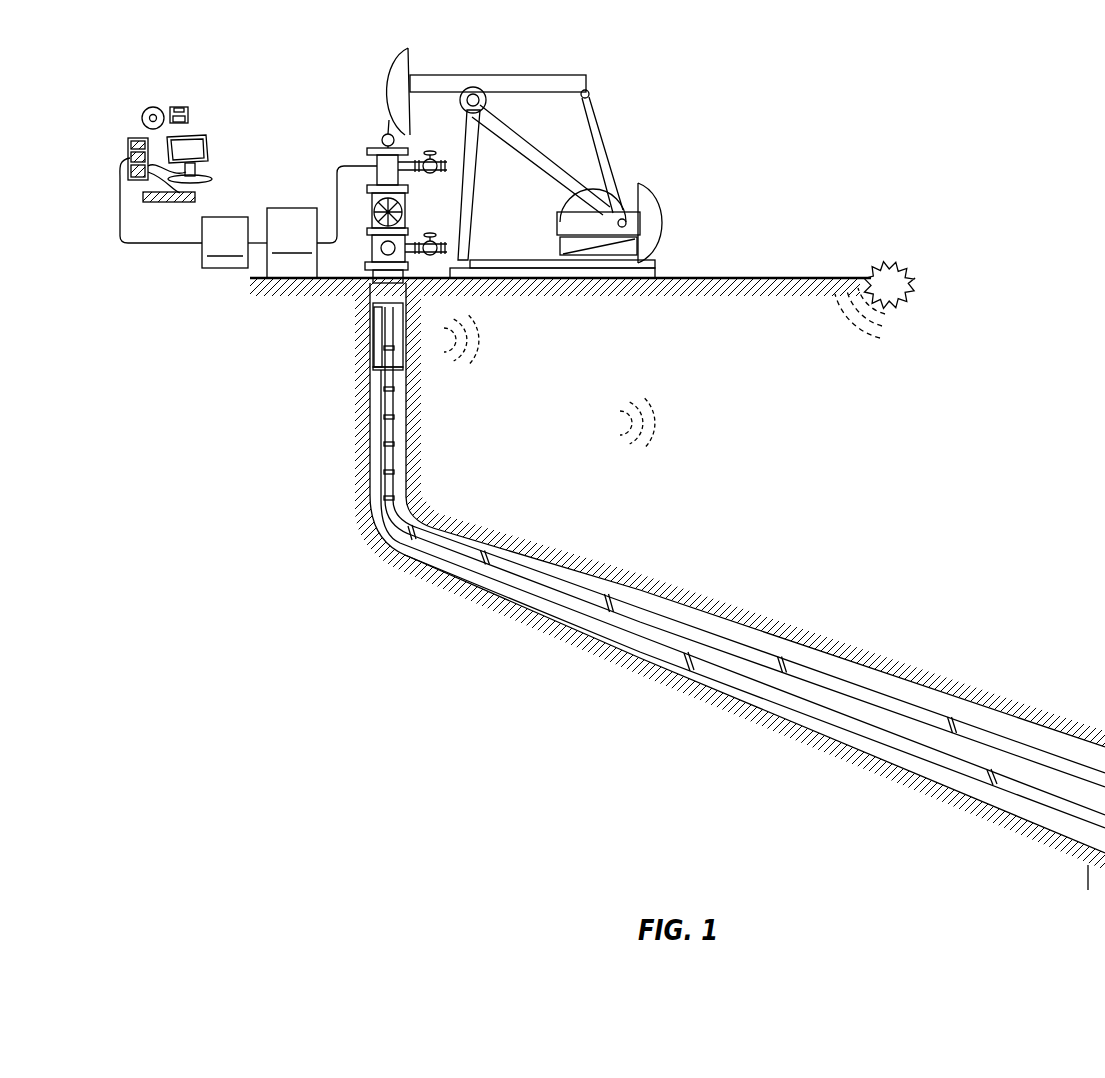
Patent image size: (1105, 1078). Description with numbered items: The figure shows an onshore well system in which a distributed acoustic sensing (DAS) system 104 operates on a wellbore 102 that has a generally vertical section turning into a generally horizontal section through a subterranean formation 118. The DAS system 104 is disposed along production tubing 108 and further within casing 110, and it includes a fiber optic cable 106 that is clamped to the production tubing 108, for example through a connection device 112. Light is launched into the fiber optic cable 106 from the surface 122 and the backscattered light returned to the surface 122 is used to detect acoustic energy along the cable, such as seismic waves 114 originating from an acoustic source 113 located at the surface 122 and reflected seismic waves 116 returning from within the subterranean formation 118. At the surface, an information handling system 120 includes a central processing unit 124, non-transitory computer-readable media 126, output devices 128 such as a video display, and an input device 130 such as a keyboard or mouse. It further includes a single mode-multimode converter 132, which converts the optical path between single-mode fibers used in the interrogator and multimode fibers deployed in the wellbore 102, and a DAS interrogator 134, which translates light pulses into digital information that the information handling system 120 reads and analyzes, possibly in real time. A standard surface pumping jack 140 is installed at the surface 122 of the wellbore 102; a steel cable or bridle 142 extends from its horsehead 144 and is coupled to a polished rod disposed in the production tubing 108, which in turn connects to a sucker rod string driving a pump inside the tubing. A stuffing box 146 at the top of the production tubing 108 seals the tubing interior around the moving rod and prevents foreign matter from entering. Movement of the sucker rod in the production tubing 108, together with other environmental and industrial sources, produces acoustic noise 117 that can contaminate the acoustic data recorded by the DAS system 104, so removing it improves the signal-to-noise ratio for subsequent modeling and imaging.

The wellbore 102 is at (662, 576).
The distributed acoustic sensing system 104 is at (590, 660).
The fiber optic cable 106 is at (373, 332).
The production tubing 108 is at (383, 380).
The casing 110 is at (372, 364).
The connection device 112 is at (606, 595).
The acoustic source 113 is at (917, 278).
The seismic waves 114 is at (862, 348).
The reflected seismic waves 116 is at (652, 453).
The acoustic noise 117 is at (475, 358).
The subterranean formation 118 is at (683, 385).
The information handling system 120 is at (241, 177).
The surface 122 is at (777, 278).
The central processing unit 124 is at (142, 138).
The non-transitory computer-readable media 126 is at (182, 107).
The output devices 128 is at (210, 147).
The input device 130 is at (197, 195).
The single mode-multimode converter 132 is at (322, 222).
The DAS interrogator 134 is at (234, 242).
The pumping jack 140 is at (522, 151).
The bridle 142 is at (387, 119).
The horsehead 144 is at (408, 50).
The stuffing box 146 is at (376, 166).